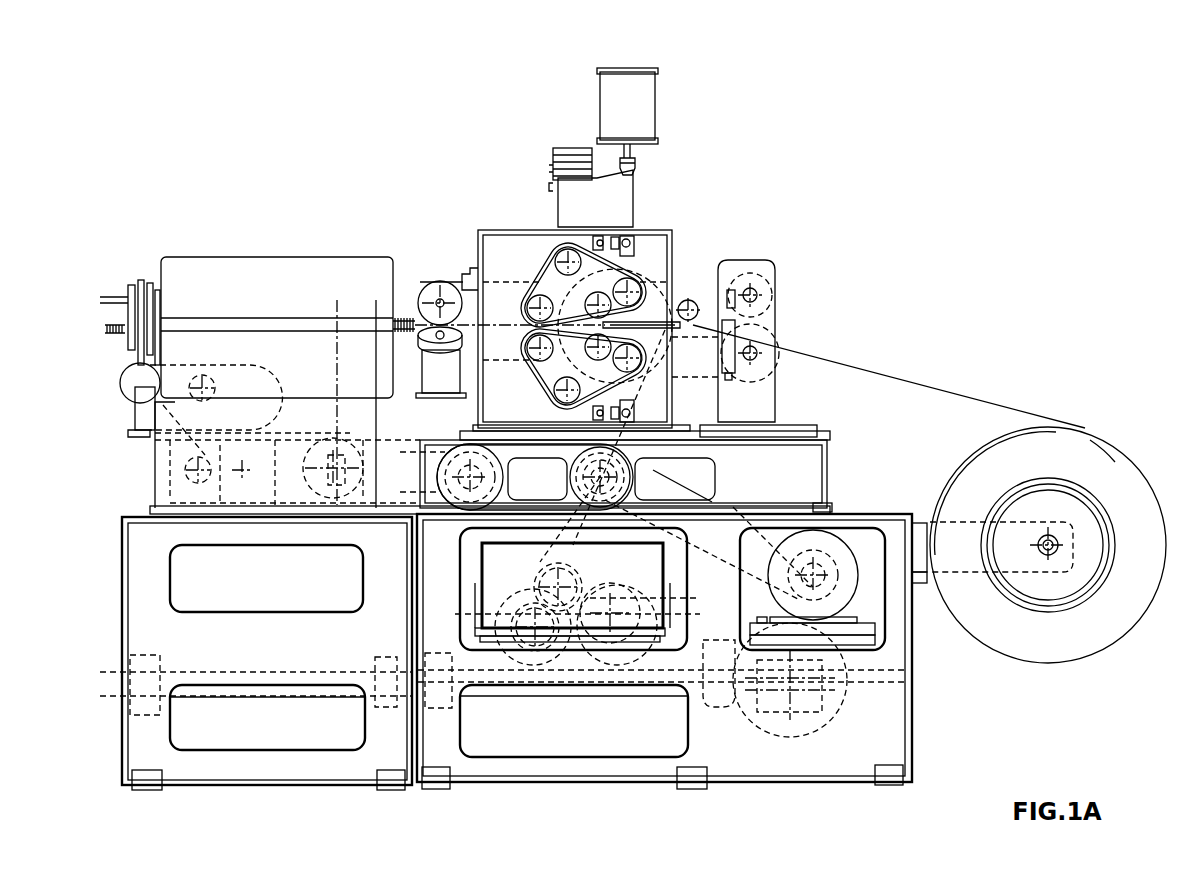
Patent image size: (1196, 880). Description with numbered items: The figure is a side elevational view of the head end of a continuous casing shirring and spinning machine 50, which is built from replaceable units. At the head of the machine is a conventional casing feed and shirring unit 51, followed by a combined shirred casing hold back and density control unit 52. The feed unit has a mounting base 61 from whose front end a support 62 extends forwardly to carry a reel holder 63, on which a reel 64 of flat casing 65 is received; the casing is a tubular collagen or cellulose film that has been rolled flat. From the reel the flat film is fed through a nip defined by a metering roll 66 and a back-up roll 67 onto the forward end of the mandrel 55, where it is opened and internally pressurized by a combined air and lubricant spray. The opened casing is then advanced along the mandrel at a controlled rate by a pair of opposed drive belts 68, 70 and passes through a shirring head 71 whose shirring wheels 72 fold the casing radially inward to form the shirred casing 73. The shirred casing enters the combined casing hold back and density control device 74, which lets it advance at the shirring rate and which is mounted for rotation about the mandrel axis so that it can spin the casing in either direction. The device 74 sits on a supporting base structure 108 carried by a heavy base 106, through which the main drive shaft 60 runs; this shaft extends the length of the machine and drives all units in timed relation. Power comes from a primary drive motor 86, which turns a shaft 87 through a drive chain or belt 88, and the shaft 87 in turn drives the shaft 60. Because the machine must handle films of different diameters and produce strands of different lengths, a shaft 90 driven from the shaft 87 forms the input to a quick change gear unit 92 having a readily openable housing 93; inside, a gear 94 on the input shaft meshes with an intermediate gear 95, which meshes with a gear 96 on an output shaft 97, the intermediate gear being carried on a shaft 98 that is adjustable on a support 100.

The continuous casing shirring and spinning machine 50 is at (618, 445).
The casing feed and shirring unit 51 is at (665, 637).
The combined shirred casing hold back and density control unit 52 is at (256, 669).
The mandrel 55 is at (690, 320).
The main drive shaft 60 is at (267, 717).
The mounting base 61 is at (870, 512).
The support 62 is at (920, 580).
The reel holder 63 is at (1038, 583).
The reel 64 is at (1058, 627).
The casing 65 is at (1091, 645).
The metering roll 66 is at (779, 360).
The back-up roll 67 is at (776, 299).
The drive belt 68 is at (553, 262).
The drive belt 70 is at (540, 387).
The shirring head 71 is at (449, 268).
The shirring wheels 72 is at (437, 288).
The shirred casing 73 is at (119, 329).
The combined casing hold back and density control device 74 is at (284, 257).
The primary drive motor 86 is at (844, 570).
The shaft 87 is at (636, 477).
The drive chain or belt 88 is at (720, 508).
The shaft 90 is at (534, 601).
The quick change gear unit 92 is at (473, 558).
The readily openable housing 93 is at (692, 598).
The gear 94 is at (468, 612).
The intermediate gear 95 is at (601, 583).
The gear 96 is at (613, 597).
The output shaft 97 is at (692, 622).
The shaft 98 is at (556, 578).
The support 100 is at (538, 584).
The heavy base 106 is at (152, 517).
The supporting base structure 108 is at (157, 469).